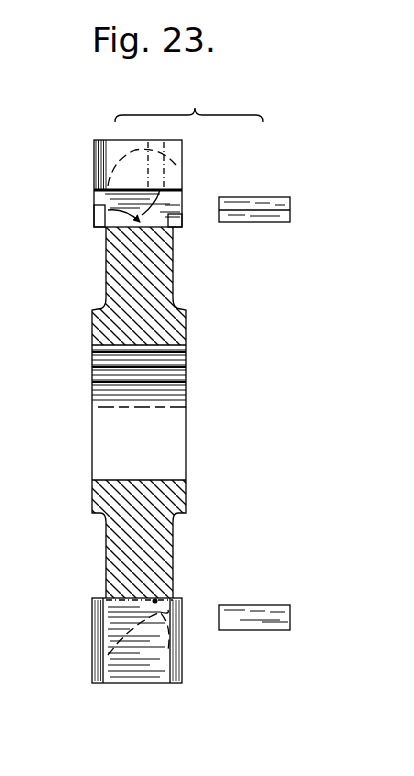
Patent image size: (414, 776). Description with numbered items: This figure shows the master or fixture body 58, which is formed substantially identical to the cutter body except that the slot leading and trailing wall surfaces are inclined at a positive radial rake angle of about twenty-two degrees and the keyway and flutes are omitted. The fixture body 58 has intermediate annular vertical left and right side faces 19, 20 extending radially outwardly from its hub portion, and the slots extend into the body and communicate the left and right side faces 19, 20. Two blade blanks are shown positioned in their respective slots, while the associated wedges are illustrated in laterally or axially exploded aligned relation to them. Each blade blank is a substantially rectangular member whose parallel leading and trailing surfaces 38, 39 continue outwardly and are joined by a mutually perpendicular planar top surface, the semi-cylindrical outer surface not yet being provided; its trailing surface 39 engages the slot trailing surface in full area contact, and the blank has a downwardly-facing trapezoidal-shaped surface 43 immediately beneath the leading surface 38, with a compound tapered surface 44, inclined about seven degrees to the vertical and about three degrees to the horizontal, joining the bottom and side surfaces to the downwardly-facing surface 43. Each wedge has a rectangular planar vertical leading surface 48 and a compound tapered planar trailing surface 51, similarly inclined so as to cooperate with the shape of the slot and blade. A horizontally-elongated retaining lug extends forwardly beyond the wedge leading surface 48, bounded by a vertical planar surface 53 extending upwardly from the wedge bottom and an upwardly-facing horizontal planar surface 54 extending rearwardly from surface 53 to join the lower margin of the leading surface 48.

The left side face 19 is at (173, 273).
The right side face 20 is at (106, 273).
The leading surface 38 is at (142, 165).
The trailing surface 39 is at (138, 627).
The downwardly-facing surface 43 is at (94, 192).
The tapered surface 44 is at (168, 188).
The leading surface 48 is at (241, 199).
The tapered trailing surface 51 is at (253, 631).
The vertical planar surface 53 is at (241, 224).
The upwardly-facing horizontal surface 54 is at (290, 199).
The fixture body 58 is at (179, 302).